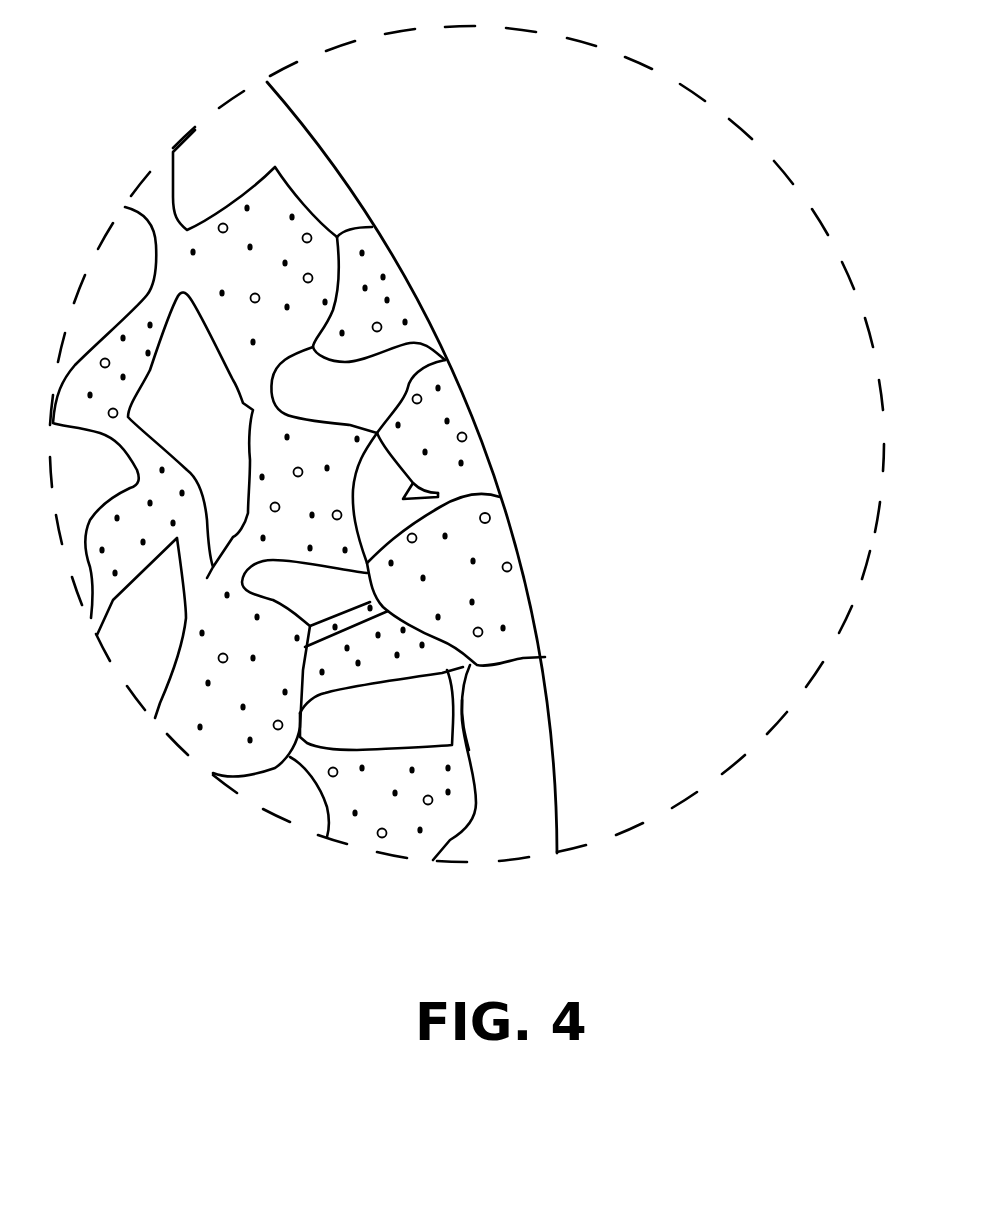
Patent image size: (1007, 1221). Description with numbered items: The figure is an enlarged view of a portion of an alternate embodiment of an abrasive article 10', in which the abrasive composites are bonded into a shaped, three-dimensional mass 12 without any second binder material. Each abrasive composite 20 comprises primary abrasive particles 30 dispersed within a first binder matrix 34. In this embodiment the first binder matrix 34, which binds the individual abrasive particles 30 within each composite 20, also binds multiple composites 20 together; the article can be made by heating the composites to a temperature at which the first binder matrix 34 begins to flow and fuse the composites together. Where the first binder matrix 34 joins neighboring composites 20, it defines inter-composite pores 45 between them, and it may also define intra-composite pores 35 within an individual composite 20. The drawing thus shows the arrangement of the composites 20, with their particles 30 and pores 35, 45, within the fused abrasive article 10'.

The abrasive article 10' is at (467, 444).
The shaped, three-dimensional mass 12 is at (321, 152).
The abrasive composite 20 is at (497, 662).
The primary abrasive particles 30 is at (387, 297).
The first binder matrix 34 is at (510, 600).
The intra-composite pores 35 is at (490, 520).
The inter-composite pores 45 is at (438, 492).